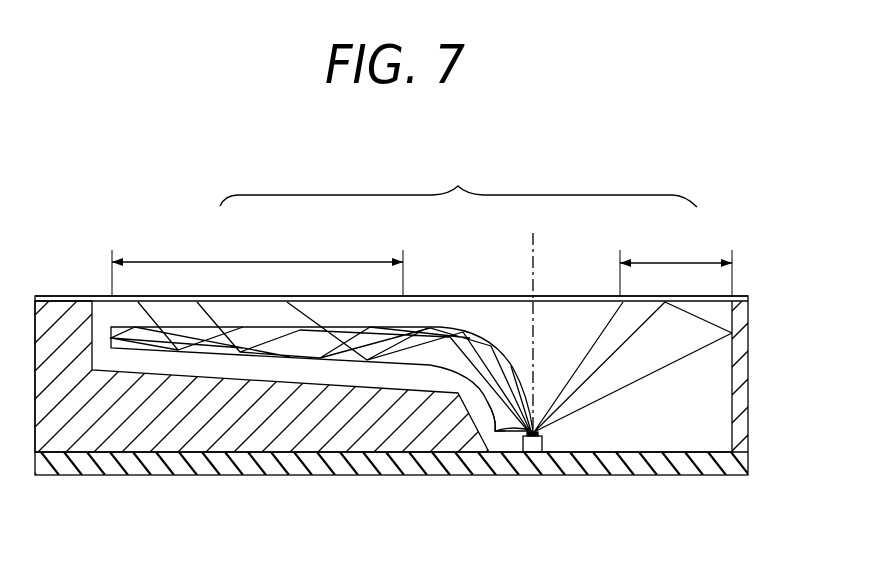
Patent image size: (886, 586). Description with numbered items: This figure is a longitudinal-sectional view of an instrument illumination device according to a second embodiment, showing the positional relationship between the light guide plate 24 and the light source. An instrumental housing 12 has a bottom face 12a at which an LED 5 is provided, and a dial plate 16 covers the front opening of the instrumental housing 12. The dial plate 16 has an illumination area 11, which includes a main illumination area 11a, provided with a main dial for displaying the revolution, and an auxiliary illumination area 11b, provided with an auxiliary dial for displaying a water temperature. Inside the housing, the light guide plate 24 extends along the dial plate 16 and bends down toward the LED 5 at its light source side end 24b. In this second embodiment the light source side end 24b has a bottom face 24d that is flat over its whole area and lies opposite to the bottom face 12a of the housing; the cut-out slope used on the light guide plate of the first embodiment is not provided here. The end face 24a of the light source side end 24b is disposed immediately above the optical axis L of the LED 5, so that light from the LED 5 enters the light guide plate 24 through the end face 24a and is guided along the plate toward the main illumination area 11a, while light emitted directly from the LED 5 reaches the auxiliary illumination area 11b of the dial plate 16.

The LED 5 is at (542, 444).
The illumination area 11 is at (458, 182).
The main illumination area 11a is at (242, 261).
The auxiliary illumination area 11b is at (667, 262).
The instrumental housing 12 is at (758, 454).
The bottom face 12a is at (608, 453).
The dial plate 16 is at (585, 292).
The light guide plate 24 is at (455, 318).
The end face 24a is at (540, 430).
The light source side end 24b is at (488, 436).
The bottom face 24d is at (497, 434).
The optical axis L is at (533, 292).